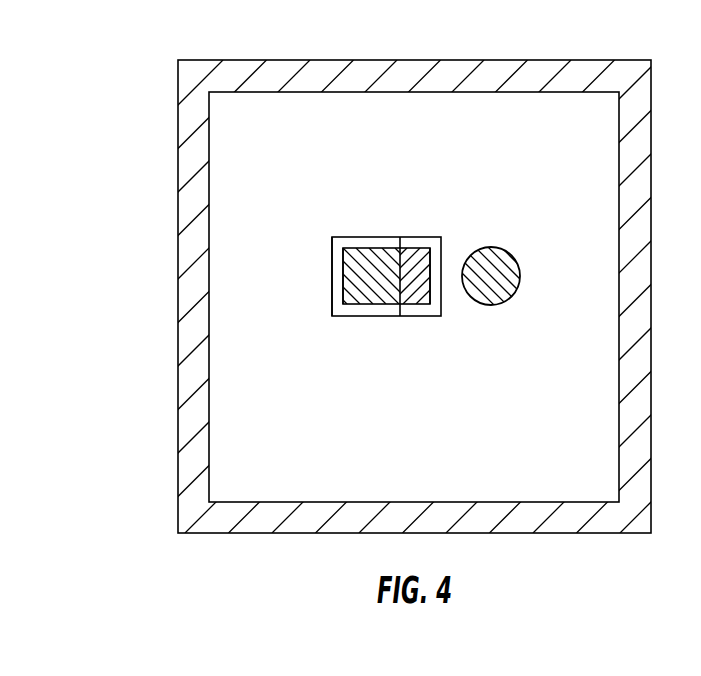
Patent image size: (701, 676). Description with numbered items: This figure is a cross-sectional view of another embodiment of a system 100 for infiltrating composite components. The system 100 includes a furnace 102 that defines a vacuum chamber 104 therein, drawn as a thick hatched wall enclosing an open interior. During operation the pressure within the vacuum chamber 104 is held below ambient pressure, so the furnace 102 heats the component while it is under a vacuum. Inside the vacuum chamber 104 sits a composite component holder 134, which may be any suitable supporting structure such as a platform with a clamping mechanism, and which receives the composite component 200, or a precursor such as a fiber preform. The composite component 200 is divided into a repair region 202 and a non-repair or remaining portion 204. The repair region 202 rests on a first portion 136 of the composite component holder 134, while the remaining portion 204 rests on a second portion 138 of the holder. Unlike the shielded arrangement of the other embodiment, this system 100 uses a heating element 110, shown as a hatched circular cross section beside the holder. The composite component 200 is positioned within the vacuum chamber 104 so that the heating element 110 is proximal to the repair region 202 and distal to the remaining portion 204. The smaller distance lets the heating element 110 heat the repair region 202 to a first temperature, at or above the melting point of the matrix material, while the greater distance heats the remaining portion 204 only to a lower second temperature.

The system 100 is at (76, 119).
The furnace 102 is at (256, 59).
The vacuum chamber 104 is at (280, 140).
The heating element 110 is at (487, 305).
The composite component holder 134 is at (300, 257).
The first portion of the composite component holder 136 is at (420, 238).
The second portion of the composite component holder 138 is at (332, 287).
The composite component 200 is at (377, 228).
The repair region 202 is at (410, 305).
The remaining portion 204 is at (355, 305).